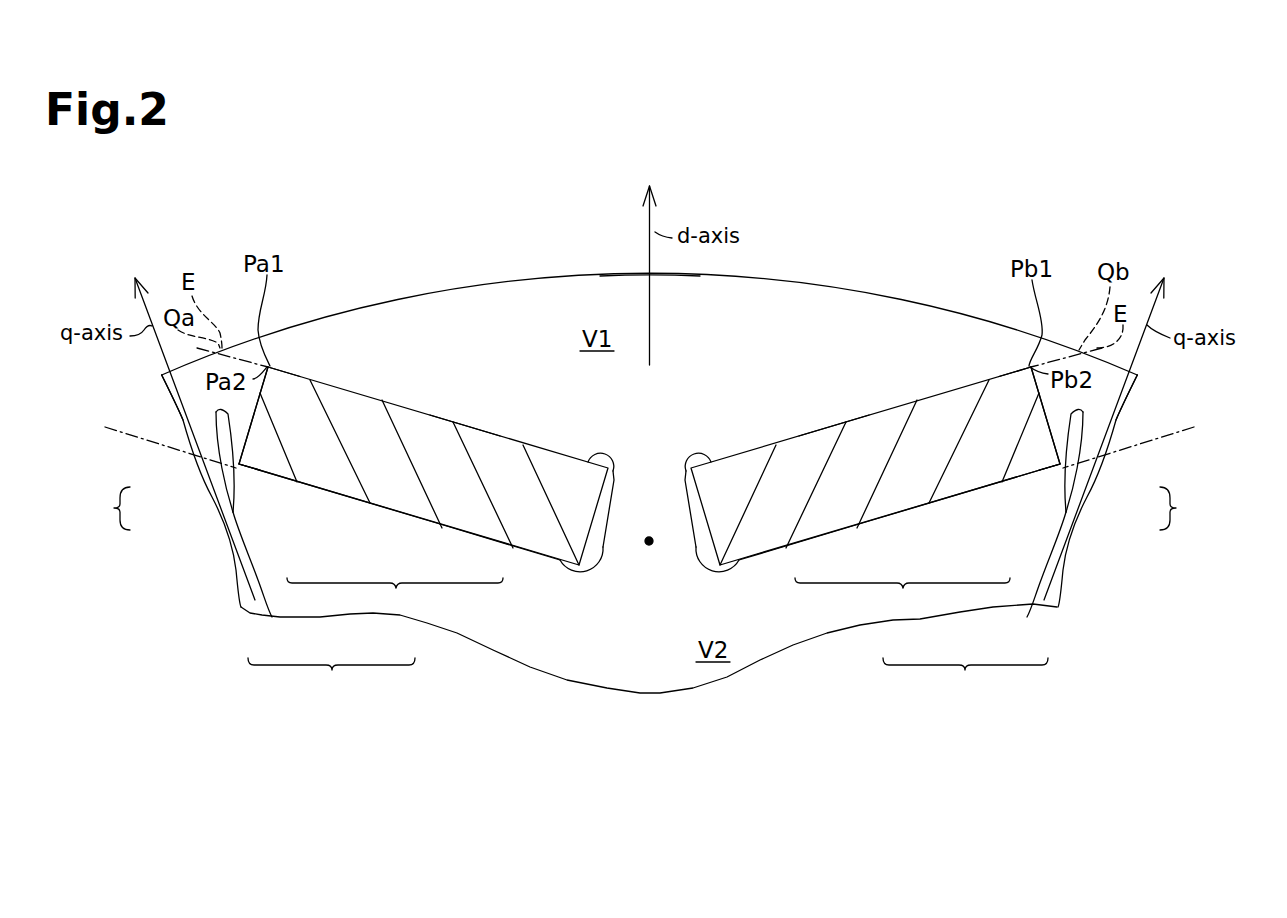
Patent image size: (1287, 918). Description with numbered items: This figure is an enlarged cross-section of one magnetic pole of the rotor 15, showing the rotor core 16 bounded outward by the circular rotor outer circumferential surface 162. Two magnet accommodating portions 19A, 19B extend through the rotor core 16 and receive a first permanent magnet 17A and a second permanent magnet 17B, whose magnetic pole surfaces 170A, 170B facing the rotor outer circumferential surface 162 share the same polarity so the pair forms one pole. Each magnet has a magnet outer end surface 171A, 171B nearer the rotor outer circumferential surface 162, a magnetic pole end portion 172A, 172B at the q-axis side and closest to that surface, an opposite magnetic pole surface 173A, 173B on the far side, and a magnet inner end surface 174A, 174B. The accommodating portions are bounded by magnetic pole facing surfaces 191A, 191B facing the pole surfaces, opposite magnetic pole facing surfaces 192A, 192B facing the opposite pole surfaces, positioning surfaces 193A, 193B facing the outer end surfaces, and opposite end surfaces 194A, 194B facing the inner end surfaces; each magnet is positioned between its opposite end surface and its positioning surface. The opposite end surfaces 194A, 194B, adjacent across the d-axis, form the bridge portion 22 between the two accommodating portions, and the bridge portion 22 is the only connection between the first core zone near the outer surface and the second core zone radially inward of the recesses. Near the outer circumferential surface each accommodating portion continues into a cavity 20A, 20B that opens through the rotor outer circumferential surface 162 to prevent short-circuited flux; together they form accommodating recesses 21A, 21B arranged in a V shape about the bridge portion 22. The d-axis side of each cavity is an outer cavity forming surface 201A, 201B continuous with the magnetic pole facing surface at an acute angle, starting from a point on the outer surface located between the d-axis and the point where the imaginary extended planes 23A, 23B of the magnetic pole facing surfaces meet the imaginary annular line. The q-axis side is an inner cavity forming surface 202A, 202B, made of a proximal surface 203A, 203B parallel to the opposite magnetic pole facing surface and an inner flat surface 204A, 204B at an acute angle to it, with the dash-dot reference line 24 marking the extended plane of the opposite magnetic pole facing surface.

The rotor 15 is at (887, 203).
The rotor core 16 is at (830, 305).
The rotor outer circumferential surface 162 is at (570, 275).
The bridge portion 22 is at (650, 548).
The reference line 24 is at (138, 436).
The first magnetic pole surface 170A is at (473, 428).
The second magnetic pole surface 170B is at (826, 428).
The first magnet outer end surface 171A is at (252, 395).
The second magnet outer end surface 171B is at (1040, 400).
The first magnetic pole end portion 172A is at (273, 364).
The second magnetic pole end portion 172B is at (1028, 367).
The first opposite magnetic pole surface 173A is at (523, 557).
The second opposite magnetic pole surface 173B is at (768, 543).
The first magnet inner end surface 174A is at (618, 510).
The second magnet inner end surface 174B is at (688, 505).
The first permanent magnet 17A is at (565, 578).
The second permanent magnet 17B is at (732, 582).
The first magnetic pole facing surface 191A is at (490, 437).
The second magnetic pole facing surface 191B is at (809, 437).
The first opposite magnetic pole facing surface 192A is at (397, 507).
The second opposite magnetic pole facing surface 192B is at (902, 507).
The first positioning surface 193A is at (260, 457).
The second positioning surface 193B is at (1039, 457).
The first opposite end surface 194A is at (607, 497).
The second opposite end surface 194B is at (692, 497).
The first magnet accommodating portion 19A is at (396, 588).
The second magnet accommodating portion 19B is at (903, 588).
The first cavity 20A is at (275, 618).
The second cavity 20B is at (1024, 618).
The first accommodating recess 21A is at (331, 680).
The second accommodating recess 21B is at (965, 680).
The imaginary extended plane of the first magnetic pole facing surface 23A is at (240, 347).
The imaginary extended plane of the second magnetic pole facing surface 23B is at (1058, 348).
The first outer cavity forming surface 201A is at (258, 350).
The second outer cavity forming surface 201B is at (1037, 356).
The first inner cavity forming surface 202A is at (90, 508).
The second inner cavity forming surface 202B is at (1202, 508).
The first proximal surface 203A is at (217, 493).
The second proximal surface 203B is at (1082, 493).
The first inner flat surface 204A is at (213, 410).
The second inner flat surface 204B is at (1086, 410).